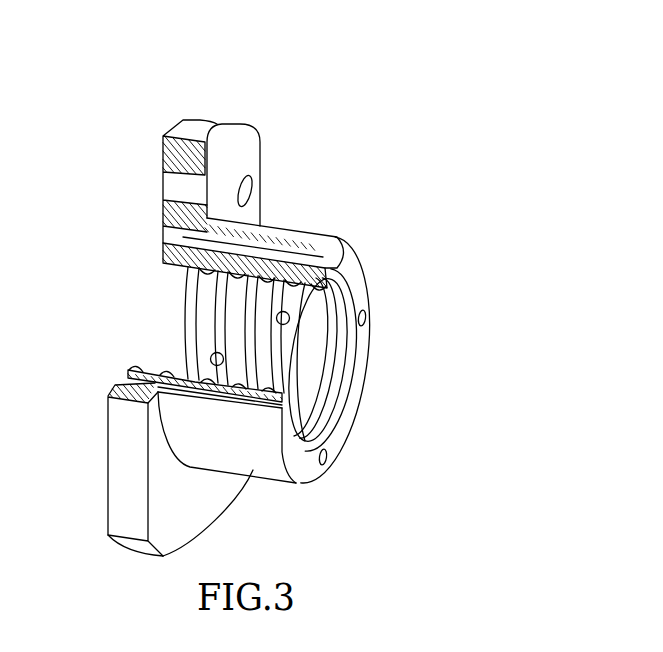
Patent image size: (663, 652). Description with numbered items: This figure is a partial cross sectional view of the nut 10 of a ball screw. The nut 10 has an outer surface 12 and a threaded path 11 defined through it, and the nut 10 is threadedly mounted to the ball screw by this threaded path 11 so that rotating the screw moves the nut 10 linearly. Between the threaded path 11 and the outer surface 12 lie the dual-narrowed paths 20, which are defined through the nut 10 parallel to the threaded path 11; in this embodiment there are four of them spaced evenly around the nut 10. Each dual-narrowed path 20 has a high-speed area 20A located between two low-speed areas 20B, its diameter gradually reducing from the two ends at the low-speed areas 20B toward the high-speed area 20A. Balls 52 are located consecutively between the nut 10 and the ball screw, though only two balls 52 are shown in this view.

The nut 10 is at (367, 259).
The threaded path 11 is at (320, 357).
The outer surface 12 is at (253, 456).
The dual-narrowed paths 20 is at (403, 80).
The high-speed area 20A is at (250, 237).
The low-speed areas 20B is at (162, 168).
The balls 52 is at (211, 355).